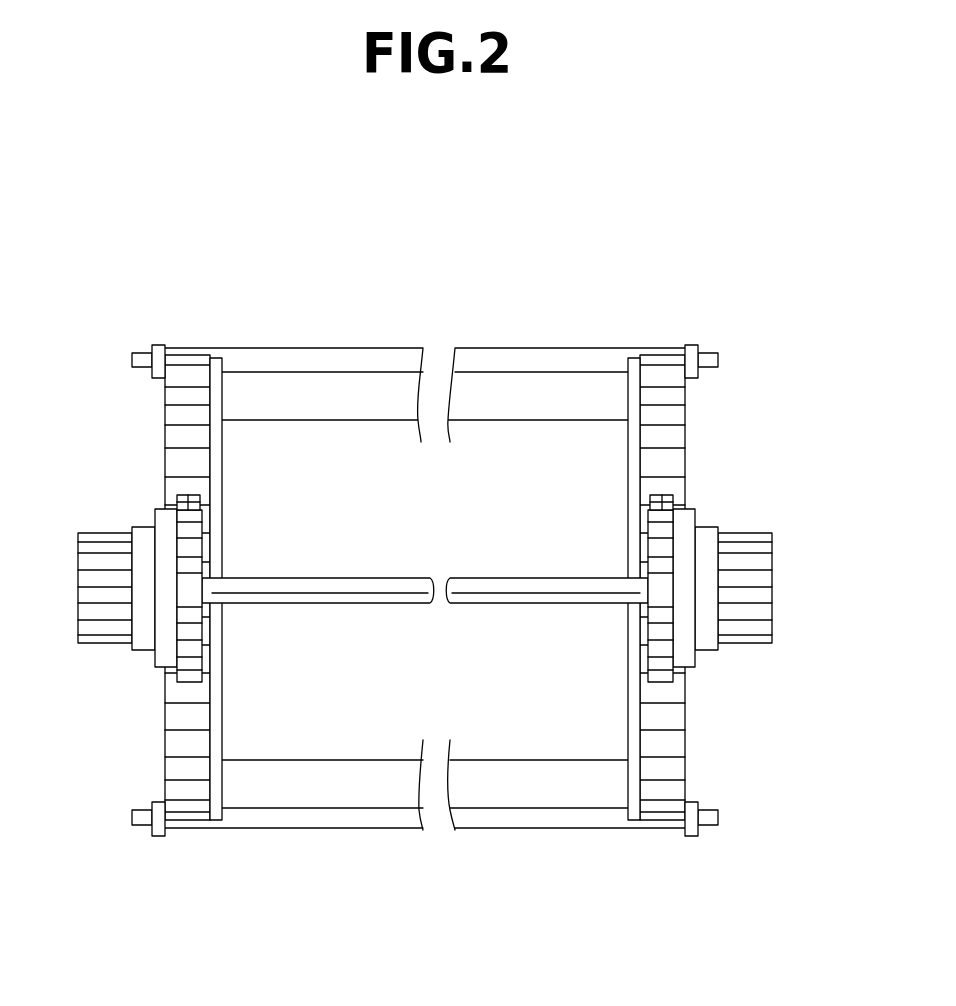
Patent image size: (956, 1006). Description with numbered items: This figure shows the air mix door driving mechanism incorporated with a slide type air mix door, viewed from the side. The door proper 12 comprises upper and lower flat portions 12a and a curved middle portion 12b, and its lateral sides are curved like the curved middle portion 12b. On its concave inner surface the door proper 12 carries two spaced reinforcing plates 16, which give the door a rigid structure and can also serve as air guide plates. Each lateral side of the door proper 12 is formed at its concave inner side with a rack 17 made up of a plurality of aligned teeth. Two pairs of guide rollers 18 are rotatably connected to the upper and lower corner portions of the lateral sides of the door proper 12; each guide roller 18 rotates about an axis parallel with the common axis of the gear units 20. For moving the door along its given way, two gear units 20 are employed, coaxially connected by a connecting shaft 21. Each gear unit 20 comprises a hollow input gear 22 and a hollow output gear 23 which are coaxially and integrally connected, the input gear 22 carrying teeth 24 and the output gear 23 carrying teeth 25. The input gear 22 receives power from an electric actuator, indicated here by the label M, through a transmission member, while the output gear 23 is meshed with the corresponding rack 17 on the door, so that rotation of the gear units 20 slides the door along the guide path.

The door proper 12 is at (426, 613).
The upper and lower flat portions 12a is at (372, 395).
The curved middle portion 12b is at (517, 463).
The reinforcing plates 16 is at (223, 780).
The rack 17 is at (190, 380).
The guide rollers 18 is at (139, 358).
The gear units 20 is at (436, 602).
The connecting shaft 21 is at (342, 588).
The hollow input gear 22 is at (431, 601).
The hollow output gear 23 is at (182, 685).
The teeth 24 is at (103, 562).
The teeth 25 is at (185, 502).
The motor M is at (723, 497).